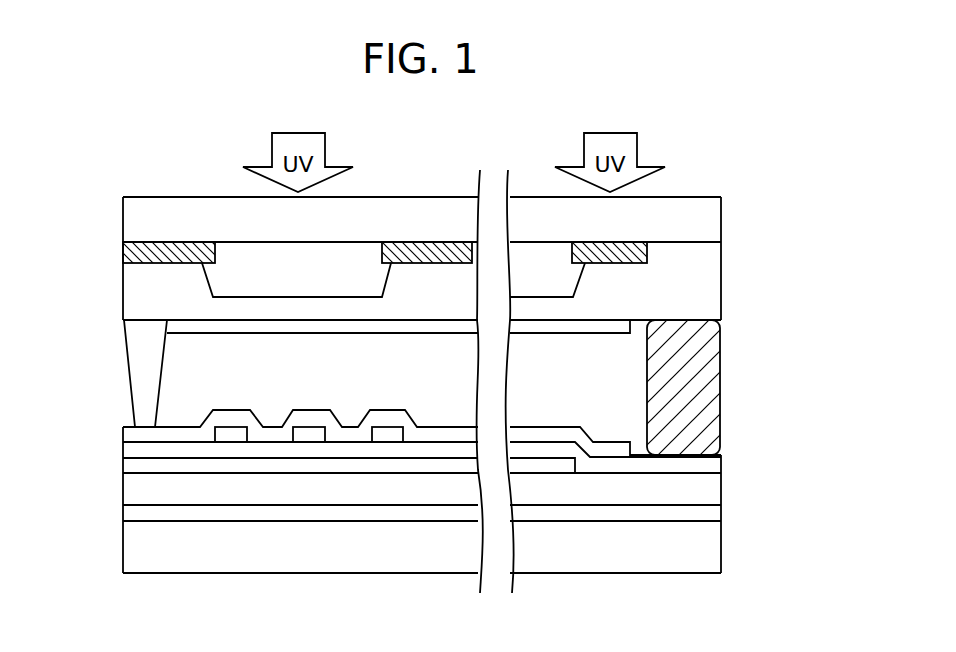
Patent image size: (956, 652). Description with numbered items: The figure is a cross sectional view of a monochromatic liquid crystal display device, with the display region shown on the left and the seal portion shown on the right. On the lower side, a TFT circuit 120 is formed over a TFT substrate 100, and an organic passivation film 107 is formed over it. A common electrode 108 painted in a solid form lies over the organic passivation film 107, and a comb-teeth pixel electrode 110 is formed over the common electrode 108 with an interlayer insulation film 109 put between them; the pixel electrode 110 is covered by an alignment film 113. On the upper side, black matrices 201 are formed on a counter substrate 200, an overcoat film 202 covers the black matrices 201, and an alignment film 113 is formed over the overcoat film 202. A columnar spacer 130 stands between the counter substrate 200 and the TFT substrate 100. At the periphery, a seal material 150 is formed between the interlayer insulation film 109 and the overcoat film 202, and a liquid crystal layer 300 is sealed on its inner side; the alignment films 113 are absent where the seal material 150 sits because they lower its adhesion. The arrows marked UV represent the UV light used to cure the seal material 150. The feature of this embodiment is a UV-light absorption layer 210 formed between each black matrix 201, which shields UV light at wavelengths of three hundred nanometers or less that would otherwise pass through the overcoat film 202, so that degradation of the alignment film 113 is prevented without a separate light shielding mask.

The TFT substrate 100 is at (130, 548).
The organic passivation film 107 is at (130, 490).
The common electrode 108 is at (130, 467).
The interlayer insulation film 109 is at (130, 447).
The pixel electrode 110 is at (310, 430).
The alignment film 113 is at (357, 325).
The TFT circuit 120 is at (130, 512).
The columnar spacer 130 is at (143, 393).
The seal material 150 is at (702, 390).
The counter substrate 200 is at (133, 222).
The black matrix 201 is at (182, 242).
The overcoat film 202 is at (140, 275).
The UV-light absorption layer 210 is at (233, 280).
The liquid crystal layer 300 is at (200, 357).